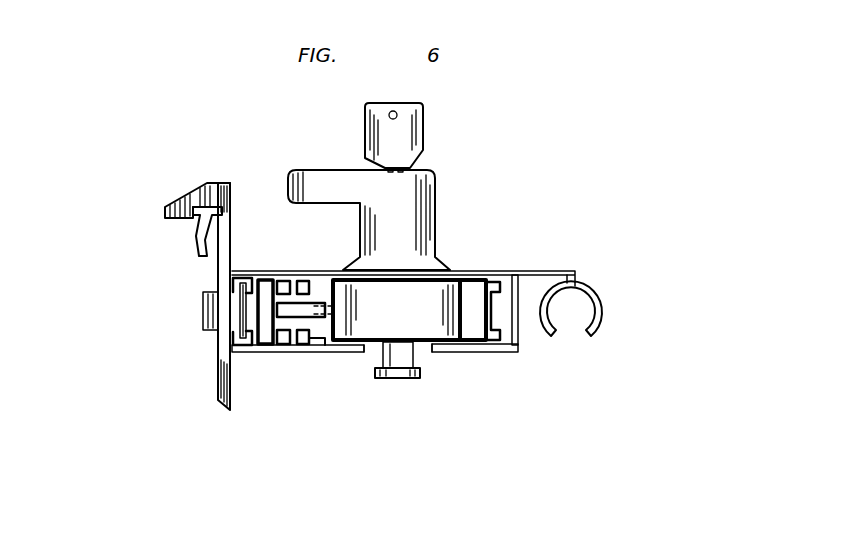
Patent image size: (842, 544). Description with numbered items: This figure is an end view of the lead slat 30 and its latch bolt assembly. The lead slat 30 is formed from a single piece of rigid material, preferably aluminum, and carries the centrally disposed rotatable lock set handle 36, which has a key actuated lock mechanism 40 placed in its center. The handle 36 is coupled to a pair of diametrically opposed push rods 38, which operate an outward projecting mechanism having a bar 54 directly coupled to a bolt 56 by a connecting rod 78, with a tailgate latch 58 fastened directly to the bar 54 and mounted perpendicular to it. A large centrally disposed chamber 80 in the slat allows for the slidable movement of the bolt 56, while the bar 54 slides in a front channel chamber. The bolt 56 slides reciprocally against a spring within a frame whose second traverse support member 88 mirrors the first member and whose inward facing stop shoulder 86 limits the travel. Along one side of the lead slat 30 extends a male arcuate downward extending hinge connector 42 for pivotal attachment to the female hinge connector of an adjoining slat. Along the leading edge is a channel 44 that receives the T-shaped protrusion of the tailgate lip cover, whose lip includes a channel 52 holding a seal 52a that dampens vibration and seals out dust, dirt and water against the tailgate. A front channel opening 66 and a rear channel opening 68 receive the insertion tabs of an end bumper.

The lead slat 30 is at (577, 270).
The lock set handle 36 is at (433, 222).
The push rods 38 is at (405, 378).
The key actuated lock mechanism 40 is at (420, 132).
The male arcuate downward extending hinge connector 42 is at (604, 306).
The channel 44 is at (242, 353).
The channel 52 is at (205, 210).
The seal 52a is at (198, 232).
The bar 54 is at (267, 279).
The bolt 56 is at (437, 308).
The tailgate latch 58 is at (203, 305).
The front channel opening 66 is at (291, 350).
The rear channel opening 68 is at (510, 337).
The connecting rod 78 is at (283, 302).
The chamber 80 is at (373, 352).
The stop shoulder 86 is at (472, 298).
The second traverse support member 88 is at (325, 346).